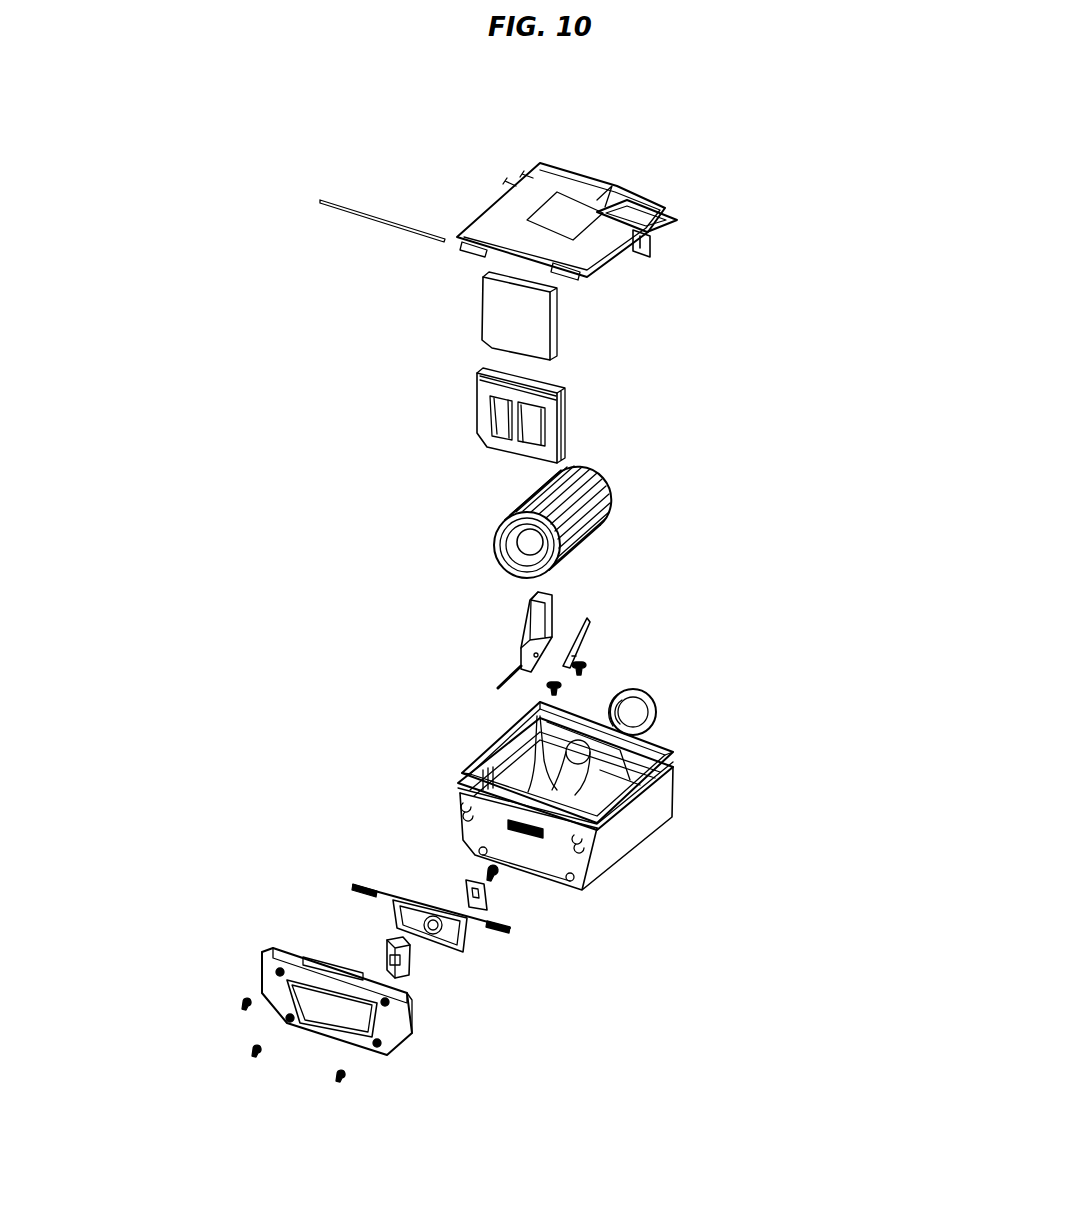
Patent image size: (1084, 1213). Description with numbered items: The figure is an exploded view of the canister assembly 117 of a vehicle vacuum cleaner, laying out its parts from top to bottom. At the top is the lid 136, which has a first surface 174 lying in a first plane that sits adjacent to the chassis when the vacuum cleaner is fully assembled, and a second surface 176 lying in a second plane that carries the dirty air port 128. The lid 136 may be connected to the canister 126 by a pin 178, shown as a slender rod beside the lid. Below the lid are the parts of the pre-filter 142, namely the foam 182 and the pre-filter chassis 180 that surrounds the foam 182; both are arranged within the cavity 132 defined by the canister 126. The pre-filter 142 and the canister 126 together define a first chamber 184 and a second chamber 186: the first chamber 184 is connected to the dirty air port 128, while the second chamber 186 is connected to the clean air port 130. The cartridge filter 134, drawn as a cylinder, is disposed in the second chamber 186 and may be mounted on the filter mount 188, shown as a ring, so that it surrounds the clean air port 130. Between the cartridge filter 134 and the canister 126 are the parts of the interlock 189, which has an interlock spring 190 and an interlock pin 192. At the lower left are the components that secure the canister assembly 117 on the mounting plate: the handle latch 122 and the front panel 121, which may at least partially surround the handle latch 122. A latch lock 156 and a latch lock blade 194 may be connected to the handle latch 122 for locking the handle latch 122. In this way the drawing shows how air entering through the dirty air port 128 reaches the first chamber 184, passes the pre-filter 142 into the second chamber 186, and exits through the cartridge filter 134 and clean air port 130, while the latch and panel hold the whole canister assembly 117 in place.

The canister assembly 117 is at (185, 105).
The first surface 174 is at (510, 222).
The second surface 176 is at (585, 212).
The dirty air port 128 is at (640, 217).
The lid 136 is at (687, 218).
The pin 178 is at (322, 205).
The foam 182 is at (563, 325).
The pre-filter 142 is at (478, 409).
The pre-filter chassis 180 is at (563, 413).
The cartridge filter 134 is at (617, 480).
The interlock 189 is at (568, 597).
The interlock spring 190 is at (595, 635).
The interlock pin 192 is at (493, 683).
The filter mount 188 is at (663, 702).
The canister 126 is at (680, 800).
The clean air port 130 is at (527, 762).
The cavity 132 is at (560, 793).
The second chamber 186 is at (527, 773).
The first chamber 184 is at (598, 792).
The handle latch 122 is at (347, 883).
The latch lock blade 194 is at (460, 880).
The latch lock 156 is at (380, 942).
The front panel 121 is at (257, 953).